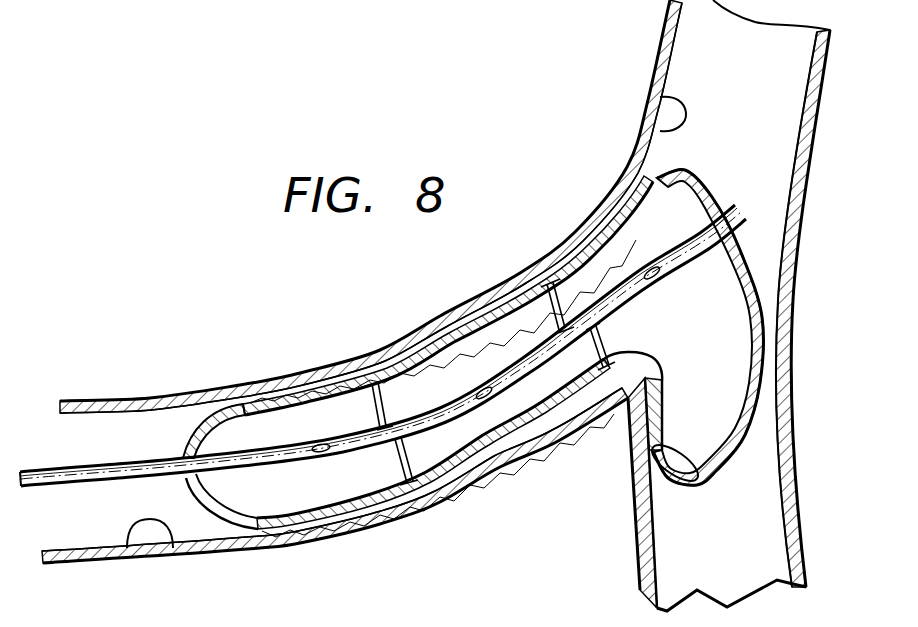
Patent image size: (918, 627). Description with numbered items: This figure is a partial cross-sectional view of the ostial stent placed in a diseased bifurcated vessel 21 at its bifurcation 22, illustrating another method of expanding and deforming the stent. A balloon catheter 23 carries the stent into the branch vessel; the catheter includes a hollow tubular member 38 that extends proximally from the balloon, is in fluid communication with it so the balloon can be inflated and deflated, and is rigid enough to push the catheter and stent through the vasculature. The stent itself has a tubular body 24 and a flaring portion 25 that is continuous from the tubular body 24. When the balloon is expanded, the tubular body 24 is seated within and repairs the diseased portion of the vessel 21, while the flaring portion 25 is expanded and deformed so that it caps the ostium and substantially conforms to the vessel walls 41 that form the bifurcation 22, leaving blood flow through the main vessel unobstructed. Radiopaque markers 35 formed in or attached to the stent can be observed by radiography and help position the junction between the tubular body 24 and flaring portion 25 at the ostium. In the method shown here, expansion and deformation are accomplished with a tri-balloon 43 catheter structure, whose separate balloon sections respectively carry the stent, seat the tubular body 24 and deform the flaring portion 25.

The bifurcated vessel 21 is at (666, 18).
The bifurcation 22 is at (620, 408).
The balloon catheter 23 is at (131, 463).
The tubular body 24 is at (313, 390).
The flaring portion 25 is at (600, 222).
The radiopaque markers 35 is at (548, 284).
The tubular member 38 is at (107, 487).
The vessel walls 41 is at (658, 128).
The tri-balloon 43 is at (713, 197).